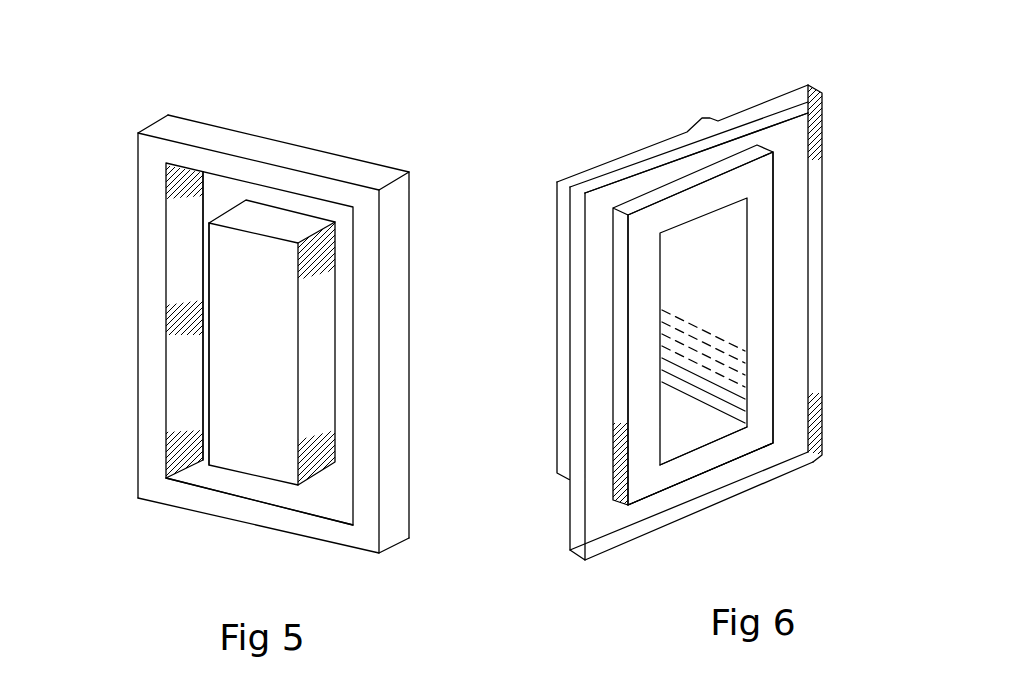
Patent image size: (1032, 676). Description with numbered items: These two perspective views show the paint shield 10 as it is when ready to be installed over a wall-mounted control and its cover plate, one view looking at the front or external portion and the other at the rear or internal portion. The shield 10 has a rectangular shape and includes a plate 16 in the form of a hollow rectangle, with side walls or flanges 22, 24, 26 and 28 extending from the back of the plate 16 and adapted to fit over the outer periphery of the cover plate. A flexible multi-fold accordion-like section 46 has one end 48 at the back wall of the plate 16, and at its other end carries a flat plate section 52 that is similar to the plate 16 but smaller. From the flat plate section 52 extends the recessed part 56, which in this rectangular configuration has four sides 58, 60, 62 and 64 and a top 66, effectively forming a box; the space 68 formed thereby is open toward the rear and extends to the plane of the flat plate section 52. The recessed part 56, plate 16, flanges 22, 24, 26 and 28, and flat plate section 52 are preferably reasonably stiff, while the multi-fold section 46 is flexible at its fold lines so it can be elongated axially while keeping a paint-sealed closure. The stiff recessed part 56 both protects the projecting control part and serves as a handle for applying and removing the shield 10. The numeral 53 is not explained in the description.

In FIG. 5, the paint shield 10 is at (120, 298).
In FIG. 6, the paint shield 10 is at (538, 216).
In FIG. 6, the plate 16 is at (795, 293).
In FIG. 5, the side wall or flange 22 is at (258, 147).
In FIG. 6, the side wall or flange 22 is at (763, 110).
In FIG. 5, the side wall or flange 24 is at (393, 322).
In FIG. 6, the side wall or flange 24 is at (578, 507).
In FIG. 5, the side wall or flange 26 is at (397, 547).
In FIG. 6, the side wall or flange 26 is at (800, 460).
In FIG. 5, the side wall or flange 28 is at (152, 118).
In FIG. 6, the side wall or flange 28 is at (813, 233).
In FIG. 5, the multi-fold section 46 is at (180, 278).
In FIG. 6, the multi-fold section 46 is at (693, 158).
In FIG. 5, the one end of multi-fold section 48 is at (343, 300).
In FIG. 6, the flat plate section 52 is at (672, 210).
In FIG. 6, the bottom portion 53 is at (712, 455).
In FIG. 5, the recessed part 56 is at (278, 410).
In FIG. 5, the side of recessed part 58 is at (285, 220).
In FIG. 5, the side of recessed part 60 is at (313, 385).
In FIG. 5, the side of recessed part 62 is at (252, 475).
In FIG. 5, the side of recessed part 64 is at (203, 253).
In FIG. 5, the top of recessed part 66 is at (230, 402).
In FIG. 6, the space 68 is at (722, 323).